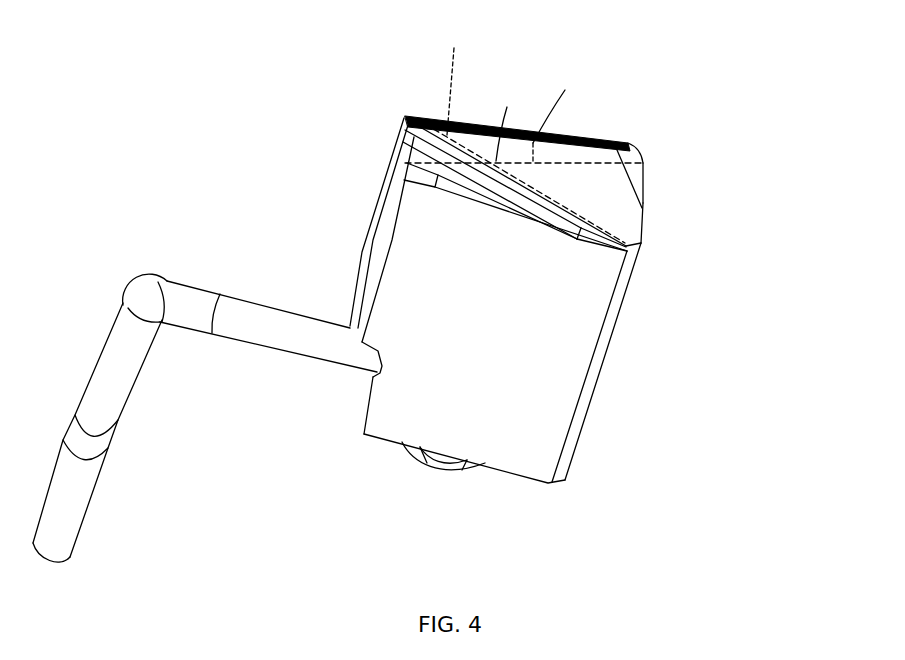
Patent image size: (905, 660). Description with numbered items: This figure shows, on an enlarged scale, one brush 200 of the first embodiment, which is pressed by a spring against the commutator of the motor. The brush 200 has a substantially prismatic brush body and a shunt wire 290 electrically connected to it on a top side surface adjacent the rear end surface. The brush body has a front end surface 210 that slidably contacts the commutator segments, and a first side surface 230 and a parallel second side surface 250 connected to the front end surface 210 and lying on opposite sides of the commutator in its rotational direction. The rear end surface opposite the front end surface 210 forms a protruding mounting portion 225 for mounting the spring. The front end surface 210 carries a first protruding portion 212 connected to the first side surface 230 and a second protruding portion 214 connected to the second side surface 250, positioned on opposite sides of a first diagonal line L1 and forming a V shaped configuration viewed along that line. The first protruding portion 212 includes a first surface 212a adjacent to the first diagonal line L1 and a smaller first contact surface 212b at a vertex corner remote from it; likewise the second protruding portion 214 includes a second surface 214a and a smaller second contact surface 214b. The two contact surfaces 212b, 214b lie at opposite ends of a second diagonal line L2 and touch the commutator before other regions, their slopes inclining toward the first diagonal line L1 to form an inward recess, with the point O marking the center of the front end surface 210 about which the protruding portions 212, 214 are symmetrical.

The brush 200 is at (196, 157).
The front end surface 210 is at (630, 222).
The first protruding portion 212 is at (302, 105).
The first surface 212a is at (410, 145).
The first contact surface 212b is at (417, 163).
The second protruding portion 214 is at (748, 152).
The second surface 214a is at (633, 215).
The second contact surface 214b is at (650, 173).
The protruding mounting portion 225 is at (445, 472).
The first side surface 230 is at (532, 317).
The second side surface 250 is at (566, 137).
The shunt wire 290 is at (110, 395).
The first diagonal line L1 is at (457, 78).
The second diagonal line L2 is at (557, 112).
The intersection point O is at (509, 122).